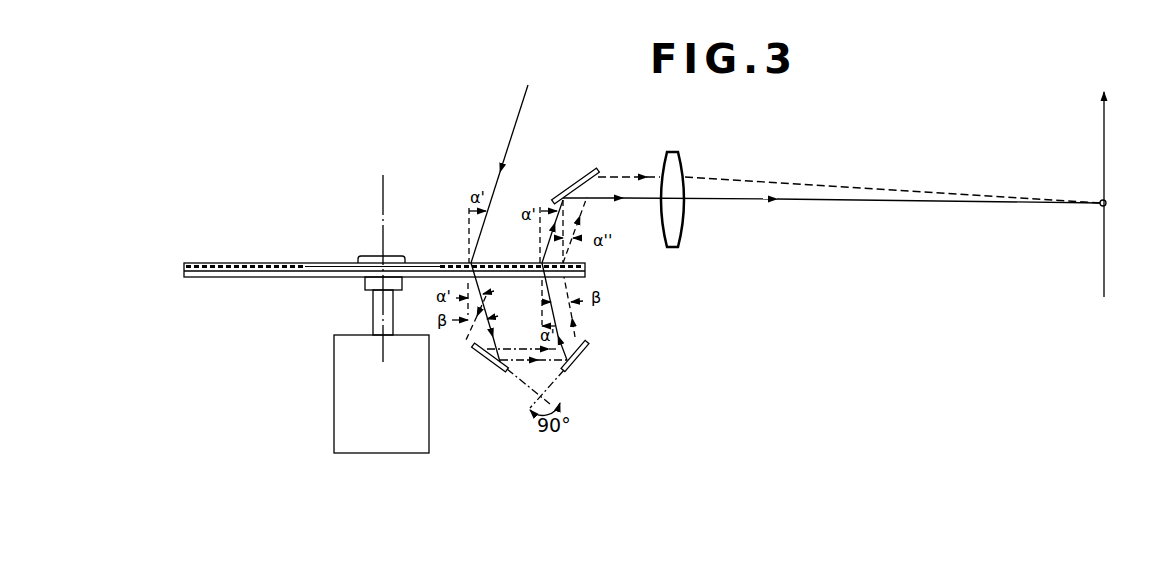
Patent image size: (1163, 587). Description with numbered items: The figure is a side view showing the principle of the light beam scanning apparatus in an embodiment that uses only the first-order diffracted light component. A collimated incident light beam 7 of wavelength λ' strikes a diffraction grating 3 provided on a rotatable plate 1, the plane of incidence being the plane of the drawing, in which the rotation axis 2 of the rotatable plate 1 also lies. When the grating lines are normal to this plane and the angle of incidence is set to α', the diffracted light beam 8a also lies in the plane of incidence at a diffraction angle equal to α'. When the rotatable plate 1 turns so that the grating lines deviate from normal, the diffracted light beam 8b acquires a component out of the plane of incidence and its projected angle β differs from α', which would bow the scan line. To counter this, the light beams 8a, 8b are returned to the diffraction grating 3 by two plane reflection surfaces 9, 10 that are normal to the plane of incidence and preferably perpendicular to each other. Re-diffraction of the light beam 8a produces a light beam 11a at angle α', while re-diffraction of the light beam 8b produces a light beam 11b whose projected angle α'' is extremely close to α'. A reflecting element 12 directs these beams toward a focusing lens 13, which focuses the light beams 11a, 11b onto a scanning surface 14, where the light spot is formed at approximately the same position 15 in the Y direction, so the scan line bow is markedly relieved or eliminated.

The rotatable plate 1 is at (184, 270).
The rotation axis 2 is at (383, 183).
The diffraction grating 3 is at (492, 263).
The incident light beam 7 is at (512, 126).
The light beam 8a is at (489, 322).
The light beam 8b is at (463, 332).
The plane reflection surface 9 is at (501, 370).
The plane reflection surface 10 is at (579, 362).
The light beam 11a is at (547, 251).
The light beam 11b is at (590, 209).
The reflecting mirror 12 is at (586, 173).
The focusing lens 13 is at (676, 152).
The scanning surface 14 is at (1106, 128).
The position 15 is at (1100, 206).